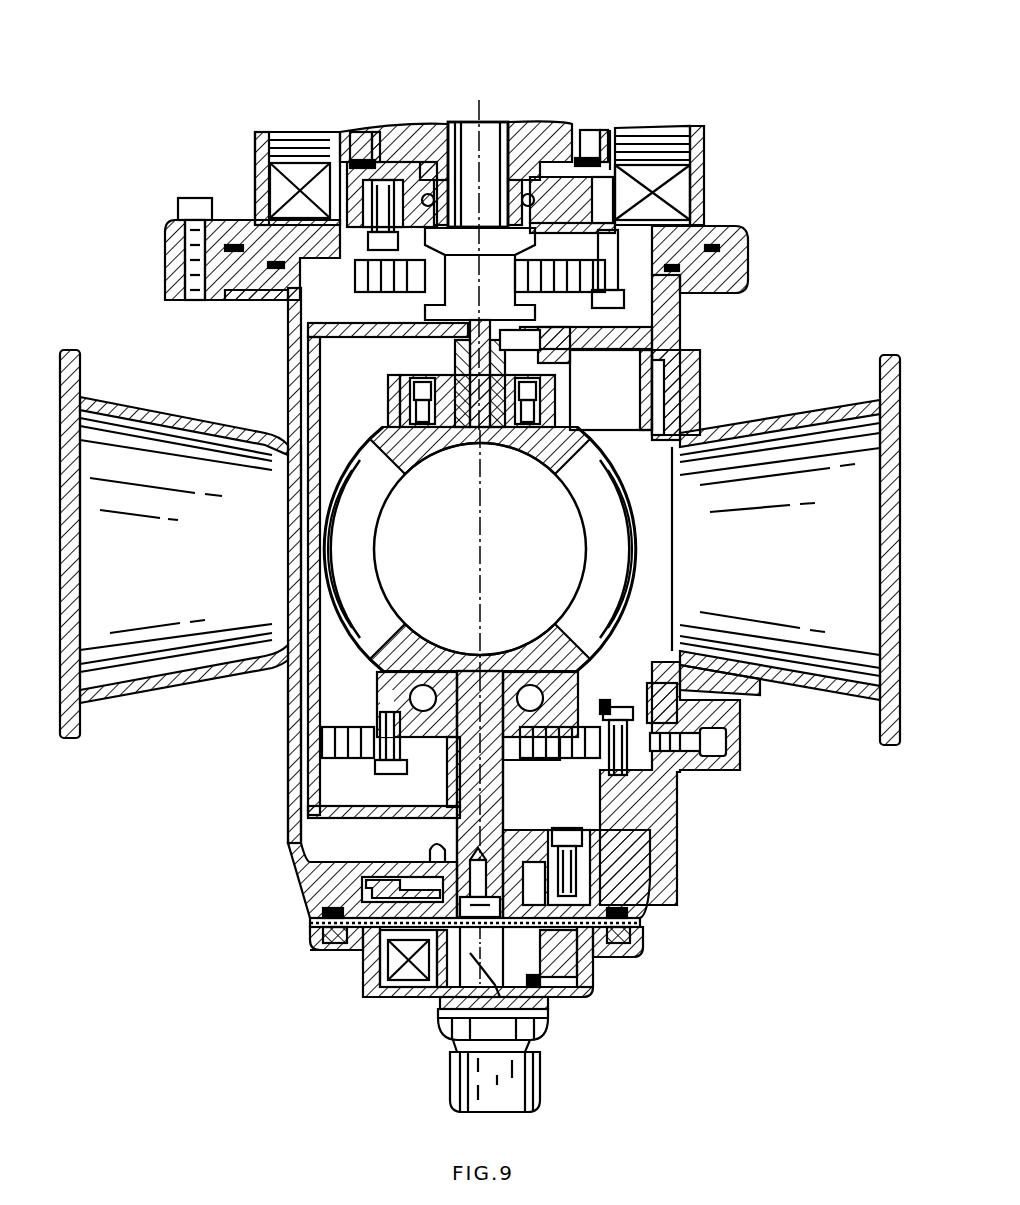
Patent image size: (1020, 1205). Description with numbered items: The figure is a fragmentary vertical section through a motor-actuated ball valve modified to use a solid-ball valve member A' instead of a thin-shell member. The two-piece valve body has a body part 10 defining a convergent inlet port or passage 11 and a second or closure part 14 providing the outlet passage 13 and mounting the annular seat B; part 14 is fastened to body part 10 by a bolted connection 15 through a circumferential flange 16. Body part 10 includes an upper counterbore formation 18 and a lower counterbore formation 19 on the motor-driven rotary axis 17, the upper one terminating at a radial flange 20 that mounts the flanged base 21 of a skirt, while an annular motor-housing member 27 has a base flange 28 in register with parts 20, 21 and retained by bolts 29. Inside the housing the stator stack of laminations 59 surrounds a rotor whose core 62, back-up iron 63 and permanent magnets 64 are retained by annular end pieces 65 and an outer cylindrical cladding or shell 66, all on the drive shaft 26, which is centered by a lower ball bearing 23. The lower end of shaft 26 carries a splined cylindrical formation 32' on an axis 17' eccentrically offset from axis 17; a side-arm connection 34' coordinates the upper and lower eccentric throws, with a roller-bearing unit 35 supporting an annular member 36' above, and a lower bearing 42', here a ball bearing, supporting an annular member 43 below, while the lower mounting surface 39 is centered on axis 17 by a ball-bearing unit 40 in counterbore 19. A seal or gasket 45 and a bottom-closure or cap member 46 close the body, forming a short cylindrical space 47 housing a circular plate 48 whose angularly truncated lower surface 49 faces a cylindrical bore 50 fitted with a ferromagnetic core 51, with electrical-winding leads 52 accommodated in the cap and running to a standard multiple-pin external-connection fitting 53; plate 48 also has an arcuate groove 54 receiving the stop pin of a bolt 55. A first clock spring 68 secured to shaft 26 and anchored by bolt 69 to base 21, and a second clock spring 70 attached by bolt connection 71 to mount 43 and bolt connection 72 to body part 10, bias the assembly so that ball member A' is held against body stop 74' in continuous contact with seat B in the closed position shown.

The body part 10 is at (282, 705).
The inlet port or passage 11 is at (178, 567).
The outlet port or passage 13 is at (778, 567).
The second or closure part 14 is at (720, 695).
The bolted connection 15 is at (722, 745).
The circumferential flange 16 is at (690, 405).
The axis of rotary actuating displacement 17 is at (480, 549).
The eccentrically offset axis 17' is at (480, 549).
The upper counterbore formation 18 is at (295, 360).
The lower counterbore formation 19 is at (292, 780).
The radial flange 20 is at (258, 290).
The flanged base 21 is at (322, 232).
The lower ball bearing 23 is at (436, 170).
The drive shaft 26 is at (490, 120).
The annular motor-housing member 27 is at (702, 165).
The base flange 28 is at (228, 220).
The bolts 29 is at (178, 210).
The splined cylindrical formation 32' is at (535, 331).
The side-arm connection 34' is at (333, 575).
The roller-bearing unit 35 is at (418, 383).
The annular member 36' is at (376, 400).
The lower mounting surface 39 is at (372, 760).
The ball-bearing unit 40 is at (400, 884).
The lower bearing 42' is at (590, 719).
The annular member 43 is at (380, 690).
The seal or gasket 45 is at (650, 932).
The bottom-closure or cap member 46 is at (585, 1000).
The short cylindrical space 47 is at (375, 985).
The circular plate 48 is at (594, 985).
The angularly truncated lower surface 49 is at (335, 950).
The cylindrical bore 50 is at (392, 1000).
The ferromagnetic core 51 is at (412, 1000).
The electrical-winding leads 52 is at (455, 1040).
The lock nut 53 is at (530, 1080).
The arcuate groove 54 is at (590, 890).
The bolt 55 is at (590, 862).
The stack of laminations 59 is at (660, 128).
The core 62 is at (410, 130).
The back-up iron 63 is at (374, 128).
The permanent magnets 64 is at (358, 128).
The annular end pieces 65 is at (610, 130).
The outer cylindrical cladding or shell 66 is at (360, 128).
The first clock spring 68 is at (545, 275).
The bolt 69 is at (690, 235).
The second clock spring 70 is at (345, 728).
The bolt connection 71 is at (372, 770).
The bolt connection 72 is at (690, 700).
The body stop 74' is at (611, 389).
The solid-ball valve member A' is at (493, 549).
The annular seat B is at (618, 470).